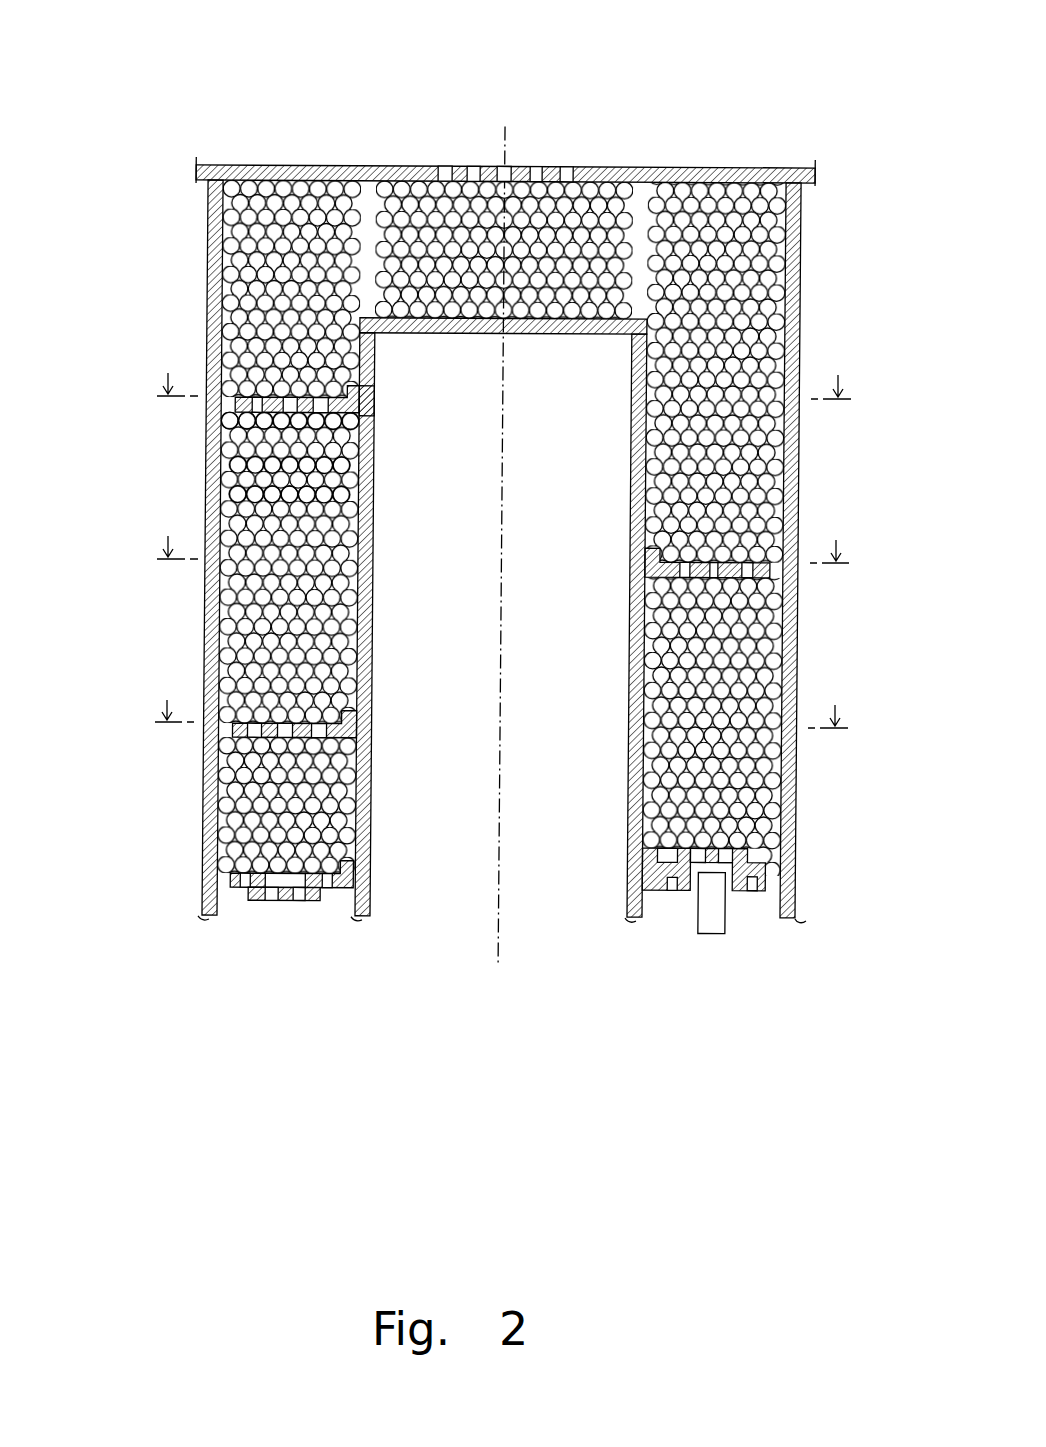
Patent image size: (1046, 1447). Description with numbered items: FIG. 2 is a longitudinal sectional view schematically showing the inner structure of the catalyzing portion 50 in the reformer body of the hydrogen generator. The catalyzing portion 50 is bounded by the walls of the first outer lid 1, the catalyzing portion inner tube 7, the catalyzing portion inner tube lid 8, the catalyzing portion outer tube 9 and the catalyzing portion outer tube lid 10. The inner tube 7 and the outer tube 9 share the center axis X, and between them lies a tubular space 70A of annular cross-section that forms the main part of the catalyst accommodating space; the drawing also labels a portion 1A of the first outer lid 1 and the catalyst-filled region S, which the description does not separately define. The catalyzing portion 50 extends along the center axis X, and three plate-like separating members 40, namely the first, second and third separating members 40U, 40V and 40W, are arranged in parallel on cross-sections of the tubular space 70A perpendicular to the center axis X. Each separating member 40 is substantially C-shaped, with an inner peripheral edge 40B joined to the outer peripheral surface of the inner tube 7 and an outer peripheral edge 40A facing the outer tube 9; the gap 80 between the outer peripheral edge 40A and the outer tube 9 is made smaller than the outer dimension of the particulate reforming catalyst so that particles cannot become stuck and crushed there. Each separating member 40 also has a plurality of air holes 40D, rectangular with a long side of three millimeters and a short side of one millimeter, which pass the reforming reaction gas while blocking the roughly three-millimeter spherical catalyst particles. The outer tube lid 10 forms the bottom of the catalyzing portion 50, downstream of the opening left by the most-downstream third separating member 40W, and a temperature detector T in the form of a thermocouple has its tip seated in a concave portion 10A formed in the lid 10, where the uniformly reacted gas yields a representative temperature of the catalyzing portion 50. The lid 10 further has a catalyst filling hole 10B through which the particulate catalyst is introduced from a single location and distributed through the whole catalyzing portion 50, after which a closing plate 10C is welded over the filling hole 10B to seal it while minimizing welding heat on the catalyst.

The catalyzing portion 50 is at (862, 73).
The first outer lid 1 is at (505, 115).
The openings in top plate 1A is at (502, 166).
The center axis X is at (505, 528).
The heat storage space filled with spherical bodies S is at (712, 192).
The catalyzing portion outer tube 9 is at (516, 551).
The tubular space 70A is at (798, 454).
The catalyzing portion inner tube lid 8 is at (541, 334).
The catalyzing portion inner tube 7 is at (364, 917).
The gap 80 is at (233, 402).
The separating member 40 is at (501, 453).
The outer peripheral edge 40A is at (230, 413).
The inner peripheral edge 40B is at (375, 401).
The air holes 40D is at (222, 462).
The first separating member 40U is at (225, 430).
The second separating member 40V is at (798, 577).
The third separating member 40W is at (207, 740).
The catalyzing portion outer tube lid 10 is at (516, 922).
The concave portion 10A is at (694, 889).
The catalyst filling hole 10B is at (297, 889).
The closing plate 10C is at (256, 900).
The temperature detector T is at (712, 931).